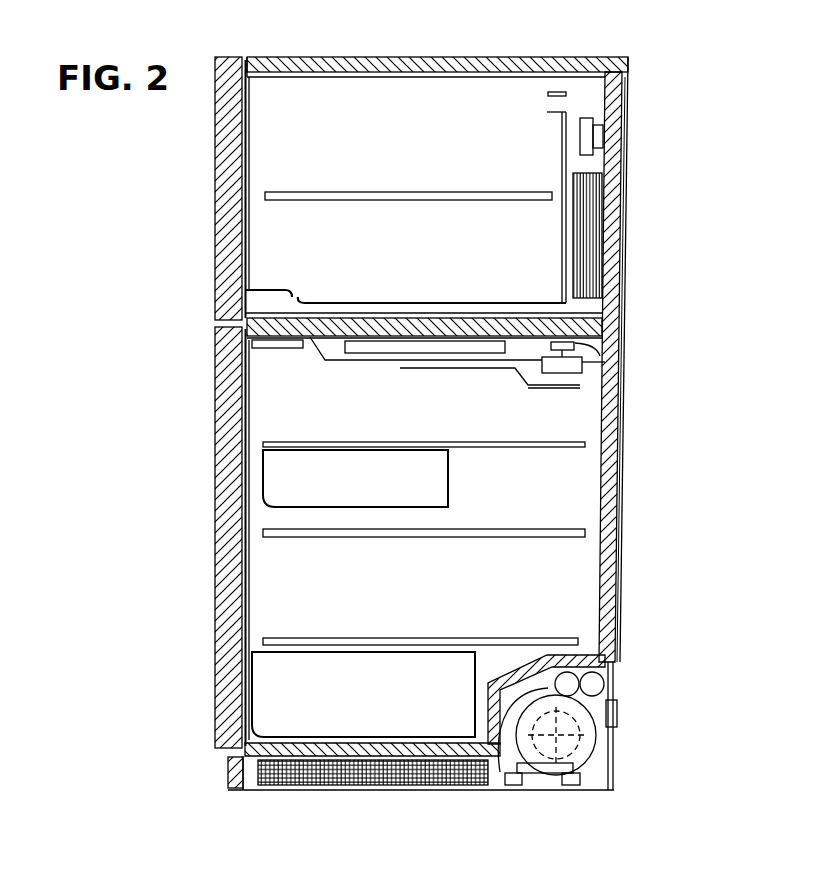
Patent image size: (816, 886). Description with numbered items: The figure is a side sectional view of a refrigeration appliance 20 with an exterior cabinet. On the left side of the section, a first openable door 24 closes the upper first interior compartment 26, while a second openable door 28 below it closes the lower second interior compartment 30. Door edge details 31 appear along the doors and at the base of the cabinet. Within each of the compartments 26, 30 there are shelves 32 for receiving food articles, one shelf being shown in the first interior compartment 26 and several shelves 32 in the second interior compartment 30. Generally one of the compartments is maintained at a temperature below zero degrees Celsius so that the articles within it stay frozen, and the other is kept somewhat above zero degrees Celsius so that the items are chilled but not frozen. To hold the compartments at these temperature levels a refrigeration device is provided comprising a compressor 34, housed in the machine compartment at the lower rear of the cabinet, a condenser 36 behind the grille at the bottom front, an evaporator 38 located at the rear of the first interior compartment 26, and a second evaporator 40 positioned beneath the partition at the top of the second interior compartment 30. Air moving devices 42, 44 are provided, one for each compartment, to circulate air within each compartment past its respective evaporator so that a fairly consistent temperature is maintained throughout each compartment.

The refrigeration appliance 20 is at (628, 106).
The first openable door 24 is at (228, 133).
The first interior compartment 26 is at (482, 98).
The second openable door 28 is at (216, 594).
The second interior compartment 30 is at (265, 388).
The door gasket 31 is at (222, 660).
The shelves 32 is at (330, 190).
The compressor 34 is at (585, 722).
The condenser 36 is at (372, 786).
The evaporator 38 is at (575, 262).
The second evaporator 40 is at (405, 358).
The air moving device 42 is at (580, 140).
The air moving device 44 is at (557, 380).